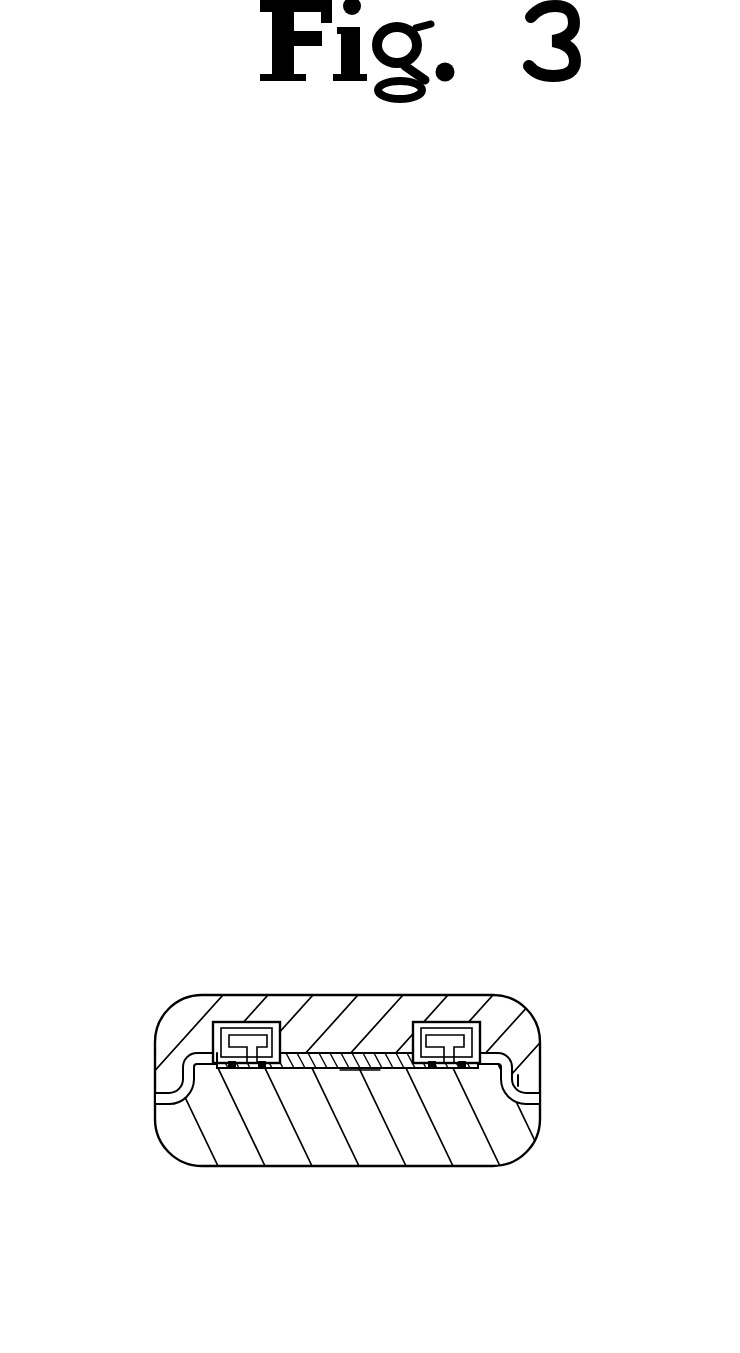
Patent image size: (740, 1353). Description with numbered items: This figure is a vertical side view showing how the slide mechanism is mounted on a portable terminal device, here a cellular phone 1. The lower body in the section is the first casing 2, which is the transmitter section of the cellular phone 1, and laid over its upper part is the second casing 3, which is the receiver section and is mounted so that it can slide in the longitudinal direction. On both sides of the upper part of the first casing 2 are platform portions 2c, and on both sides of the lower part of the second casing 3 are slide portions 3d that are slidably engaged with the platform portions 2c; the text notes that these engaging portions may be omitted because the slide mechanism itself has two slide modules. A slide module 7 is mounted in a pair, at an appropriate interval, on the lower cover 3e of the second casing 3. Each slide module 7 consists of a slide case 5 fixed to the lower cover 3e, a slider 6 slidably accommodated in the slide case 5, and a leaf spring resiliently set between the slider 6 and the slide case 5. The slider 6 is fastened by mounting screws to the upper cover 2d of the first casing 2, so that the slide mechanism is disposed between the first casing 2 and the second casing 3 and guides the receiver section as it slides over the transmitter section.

The cellular phone 1 is at (567, 993).
The first casing 2 is at (344, 1169).
The platform portion 2c is at (157, 1098).
The upper cover 2d is at (363, 1071).
The second casing 3 is at (381, 993).
The slide portion 3d is at (170, 1068).
The lower cover 3e is at (316, 1053).
The slide case 5 is at (233, 1022).
The slider 6 is at (226, 1066).
The slide module 7 is at (220, 1068).